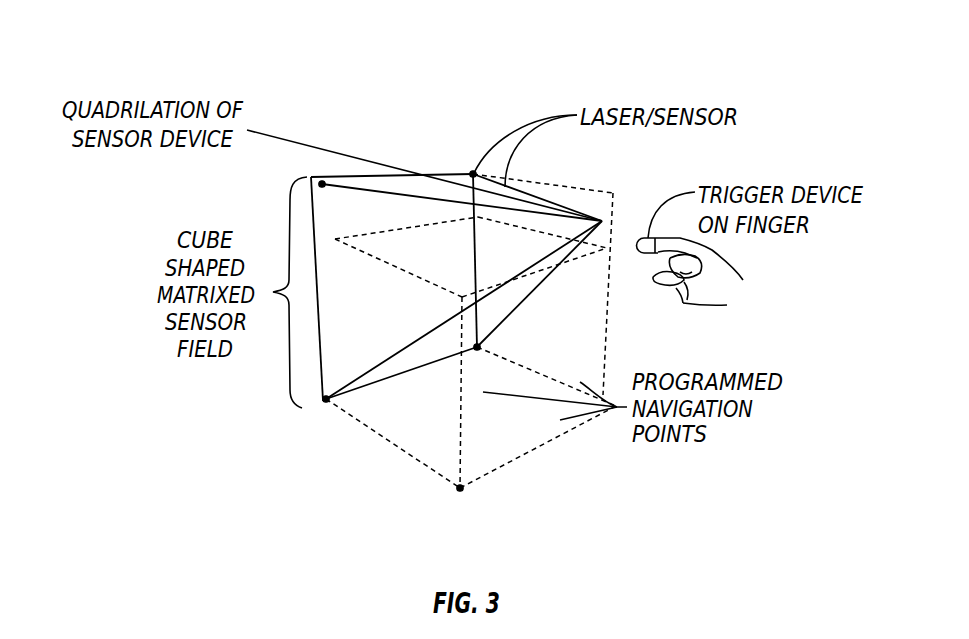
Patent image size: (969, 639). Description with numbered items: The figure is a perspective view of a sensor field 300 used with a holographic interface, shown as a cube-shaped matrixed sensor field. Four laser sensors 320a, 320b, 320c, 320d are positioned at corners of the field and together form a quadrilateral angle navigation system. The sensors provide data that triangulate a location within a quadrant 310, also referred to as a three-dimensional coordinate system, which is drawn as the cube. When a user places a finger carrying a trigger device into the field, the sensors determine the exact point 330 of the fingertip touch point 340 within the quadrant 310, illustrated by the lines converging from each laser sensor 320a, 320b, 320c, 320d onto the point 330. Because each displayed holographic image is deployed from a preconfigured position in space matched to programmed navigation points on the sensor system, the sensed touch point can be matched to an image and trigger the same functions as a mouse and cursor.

The cube shaped matrixed sensor field system 300 is at (497, 71).
The quadrant 310 is at (480, 458).
The laser sensor 320a is at (322, 184).
The laser sensor 320b is at (473, 174).
The laser sensor 320c is at (325, 403).
The laser sensor 320d is at (478, 346).
The point 330 is at (603, 220).
The fingertip touch point 340 is at (650, 256).